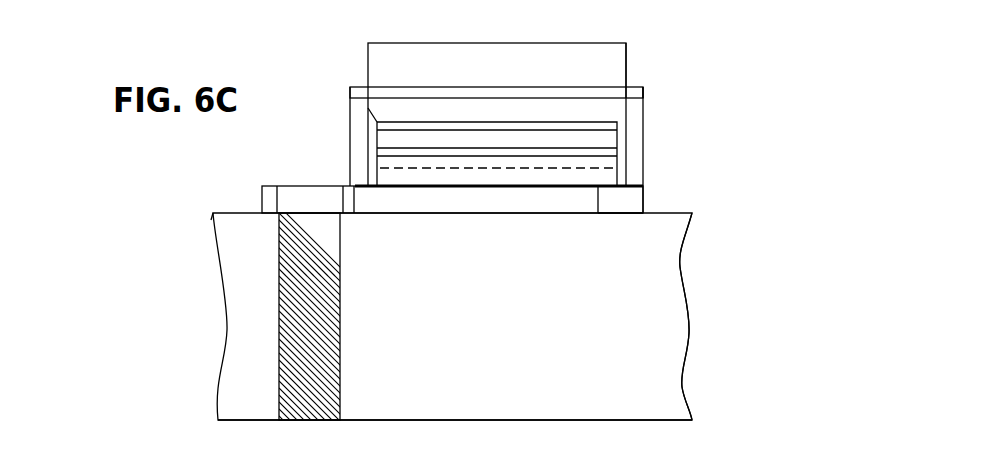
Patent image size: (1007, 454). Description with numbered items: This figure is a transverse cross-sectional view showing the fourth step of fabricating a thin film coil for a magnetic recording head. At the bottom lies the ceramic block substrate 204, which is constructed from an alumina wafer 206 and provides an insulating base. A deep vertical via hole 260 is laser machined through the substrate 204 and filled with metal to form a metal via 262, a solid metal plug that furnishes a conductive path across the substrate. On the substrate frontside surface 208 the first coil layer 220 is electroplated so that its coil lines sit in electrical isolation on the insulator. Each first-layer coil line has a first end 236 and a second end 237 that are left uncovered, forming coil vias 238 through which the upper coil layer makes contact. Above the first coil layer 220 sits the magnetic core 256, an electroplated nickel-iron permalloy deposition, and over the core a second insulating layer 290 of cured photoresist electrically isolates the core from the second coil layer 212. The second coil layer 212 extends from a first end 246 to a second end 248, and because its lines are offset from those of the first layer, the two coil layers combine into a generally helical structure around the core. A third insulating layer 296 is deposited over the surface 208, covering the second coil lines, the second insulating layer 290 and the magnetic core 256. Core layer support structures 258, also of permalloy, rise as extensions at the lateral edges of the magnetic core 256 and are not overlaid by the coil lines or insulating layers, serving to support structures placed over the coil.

The ceramic block substrate 204 is at (692, 420).
The alumina wafer 206 is at (688, 332).
The substrate frontside surface 208 is at (221, 213).
The second coil layer 212 is at (642, 88).
The first coil layer 220 is at (646, 212).
The first end 236 is at (350, 180).
The second end 237 is at (645, 186).
The coil via 238 is at (361, 186).
The first end 246 is at (351, 90).
The second end 248 is at (645, 97).
The magnetic core 256 is at (619, 124).
The core layer support structure 258 is at (463, 42).
The via hole 260 is at (287, 186).
The metal via 262 is at (279, 340).
The second insulating layer 290 is at (377, 122).
The third insulating layer 296 is at (634, 87).